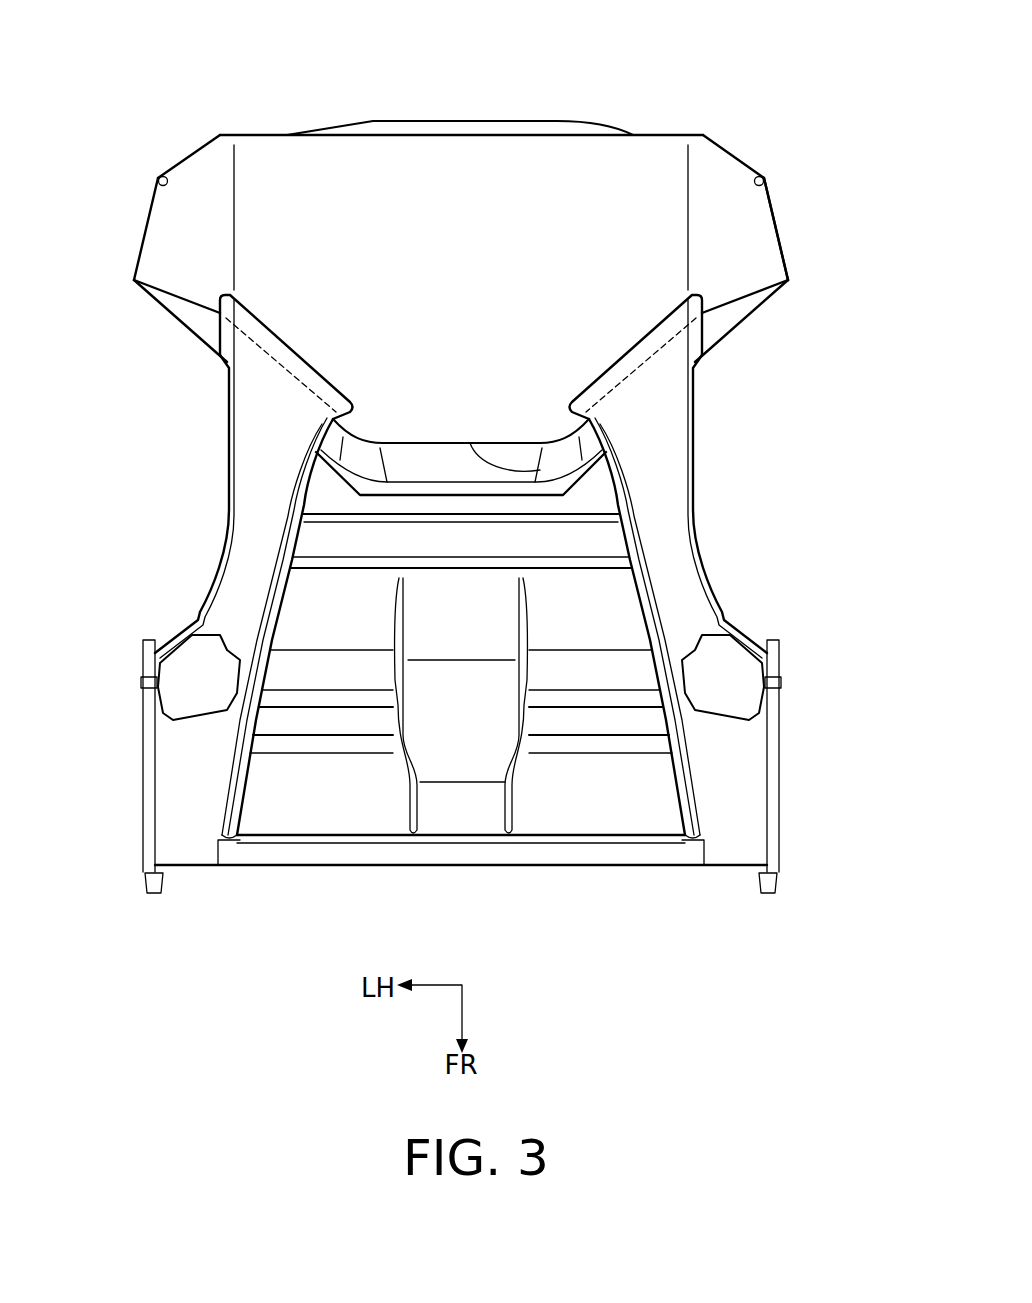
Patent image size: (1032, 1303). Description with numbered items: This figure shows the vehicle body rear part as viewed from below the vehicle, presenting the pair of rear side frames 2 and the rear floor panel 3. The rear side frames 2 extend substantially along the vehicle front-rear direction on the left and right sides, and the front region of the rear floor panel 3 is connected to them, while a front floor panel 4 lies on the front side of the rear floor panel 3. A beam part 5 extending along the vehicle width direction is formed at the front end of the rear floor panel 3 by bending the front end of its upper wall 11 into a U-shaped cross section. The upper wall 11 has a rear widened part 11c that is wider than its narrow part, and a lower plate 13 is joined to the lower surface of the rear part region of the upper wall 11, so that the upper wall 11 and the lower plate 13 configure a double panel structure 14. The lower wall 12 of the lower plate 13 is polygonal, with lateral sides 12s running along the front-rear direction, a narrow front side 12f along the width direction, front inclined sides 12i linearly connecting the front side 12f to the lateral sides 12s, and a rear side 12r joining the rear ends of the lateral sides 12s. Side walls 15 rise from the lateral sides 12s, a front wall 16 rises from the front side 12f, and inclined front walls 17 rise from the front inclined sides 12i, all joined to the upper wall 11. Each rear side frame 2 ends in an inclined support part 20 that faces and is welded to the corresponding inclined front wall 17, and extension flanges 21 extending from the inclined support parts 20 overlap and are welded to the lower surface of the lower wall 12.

The rear side frame 2 is at (225, 520).
The rear floor panel 3 is at (678, 134).
The front floor panel 4 is at (587, 815).
The beam part 5 is at (527, 543).
The upper wall 11 is at (598, 722).
The rear widened part 11c is at (783, 233).
The lower wall 12 is at (471, 252).
The front side 12f is at (520, 470).
The front inclined side 12i is at (213, 313).
The rear side 12r is at (575, 135).
The lateral side 12s is at (234, 193).
The lower plate 13 is at (471, 278).
The double panel structure 14 is at (782, 209).
The side wall 15 is at (167, 235).
The front wall 16 is at (463, 468).
The inclined front wall 17 is at (187, 315).
The inclined support part 20 is at (258, 367).
The extension flange 21 is at (263, 333).